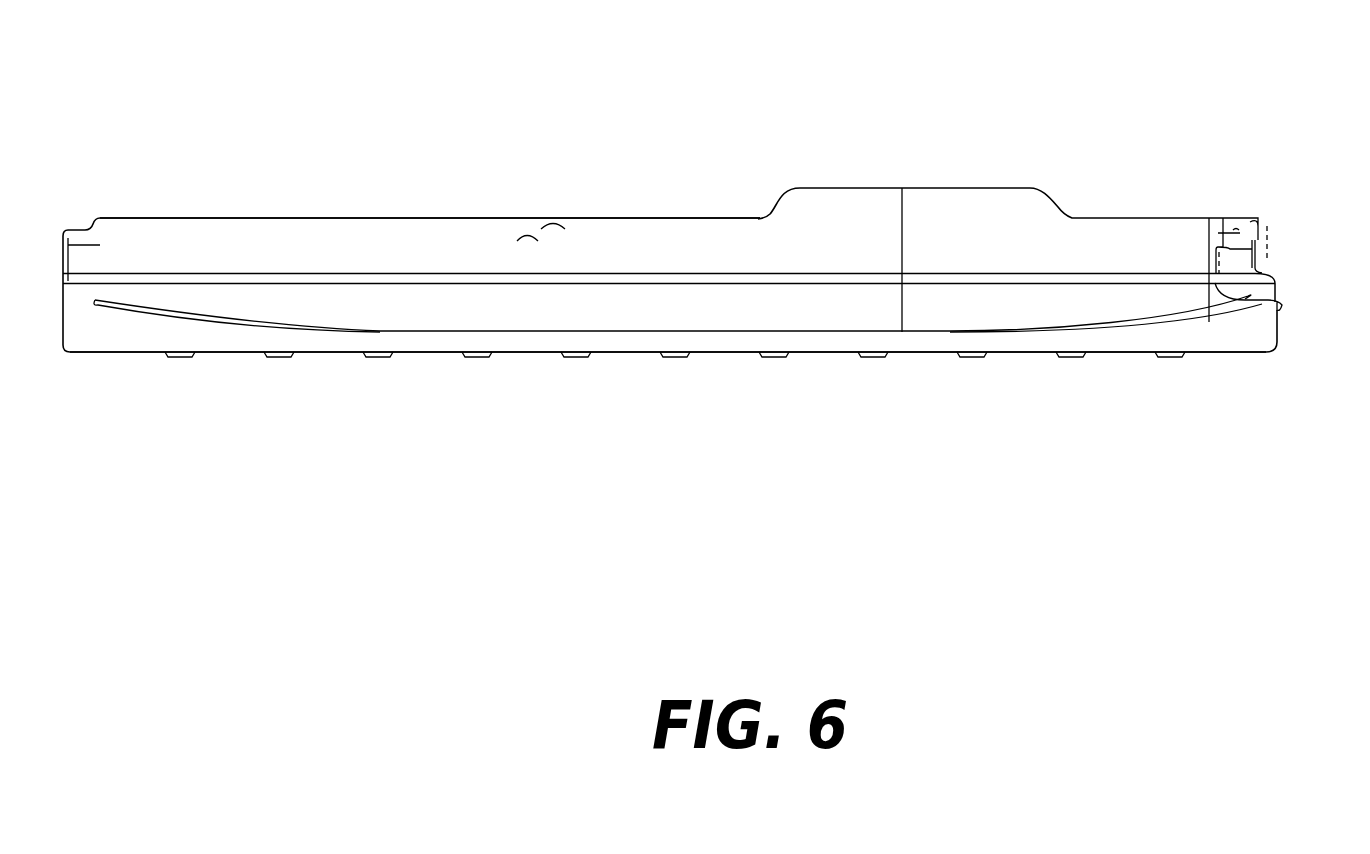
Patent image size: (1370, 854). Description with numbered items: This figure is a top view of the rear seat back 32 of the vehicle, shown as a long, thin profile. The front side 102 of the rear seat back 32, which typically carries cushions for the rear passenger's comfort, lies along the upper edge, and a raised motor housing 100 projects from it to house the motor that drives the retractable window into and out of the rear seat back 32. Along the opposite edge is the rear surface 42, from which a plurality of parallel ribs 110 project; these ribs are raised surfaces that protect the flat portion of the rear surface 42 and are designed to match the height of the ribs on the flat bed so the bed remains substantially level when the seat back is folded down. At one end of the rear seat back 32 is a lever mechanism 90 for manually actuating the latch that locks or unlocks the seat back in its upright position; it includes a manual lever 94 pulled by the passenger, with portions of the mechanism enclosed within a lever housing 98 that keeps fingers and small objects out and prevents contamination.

The rear seat back 32 is at (953, 118).
The rear surface 42 is at (731, 353).
The lever mechanism 90 is at (1277, 255).
The manual lever 94 is at (1257, 294).
The lever housing 98 is at (1234, 228).
The motor housing 100 is at (832, 197).
The front side 102 is at (706, 219).
The parallel ribs 110 is at (1072, 357).